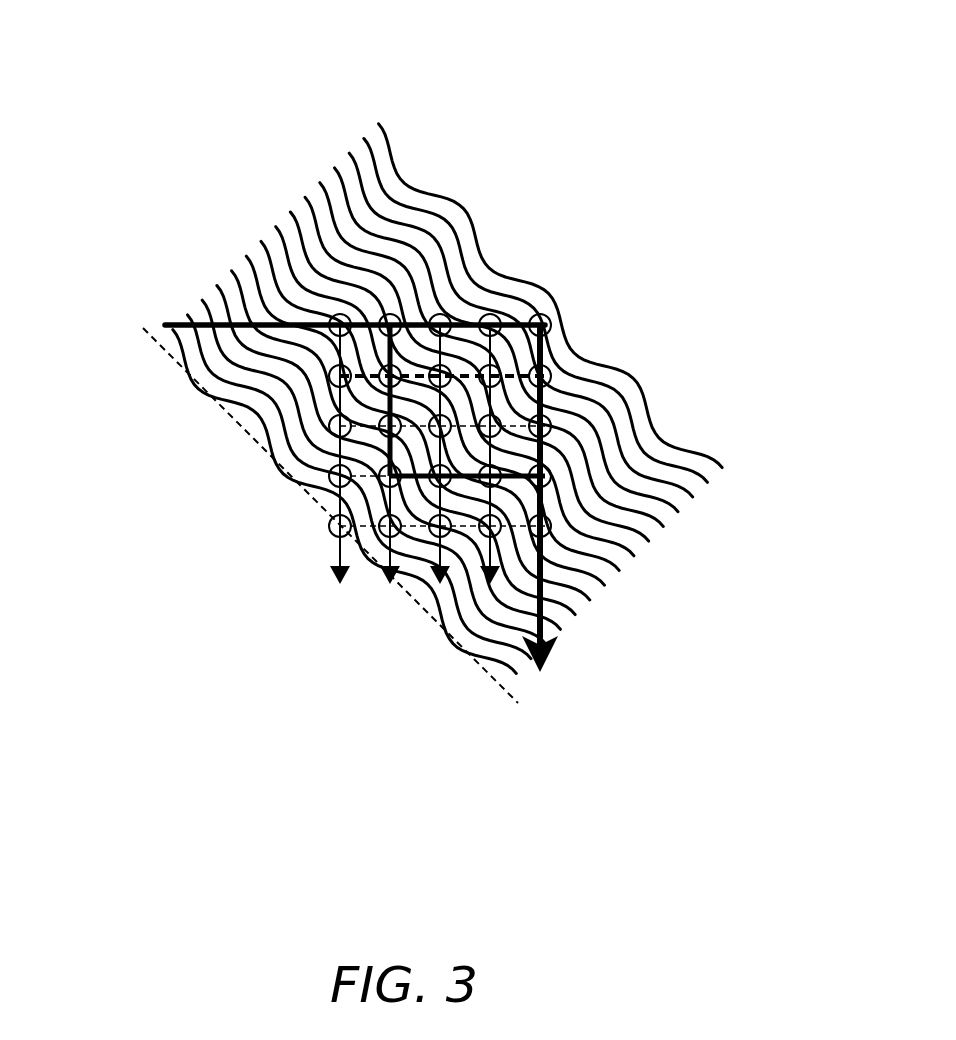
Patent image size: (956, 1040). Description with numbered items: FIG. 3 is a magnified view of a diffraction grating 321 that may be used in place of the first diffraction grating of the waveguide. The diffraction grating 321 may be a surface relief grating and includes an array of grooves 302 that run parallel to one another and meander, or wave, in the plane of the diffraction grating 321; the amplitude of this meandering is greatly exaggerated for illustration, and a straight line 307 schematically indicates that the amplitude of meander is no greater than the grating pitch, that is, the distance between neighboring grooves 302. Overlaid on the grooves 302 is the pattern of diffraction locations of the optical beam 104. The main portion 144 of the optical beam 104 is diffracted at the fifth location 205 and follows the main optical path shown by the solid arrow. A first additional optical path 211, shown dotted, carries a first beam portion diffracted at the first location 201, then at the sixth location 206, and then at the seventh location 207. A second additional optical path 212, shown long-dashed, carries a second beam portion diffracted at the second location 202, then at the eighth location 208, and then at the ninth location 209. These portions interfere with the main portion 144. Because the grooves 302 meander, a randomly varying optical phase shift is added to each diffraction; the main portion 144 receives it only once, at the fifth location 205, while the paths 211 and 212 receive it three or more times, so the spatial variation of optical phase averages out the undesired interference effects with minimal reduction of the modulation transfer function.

The optical beam 104 is at (190, 324).
The selected portion 144 is at (547, 612).
The first location 201 is at (340, 313).
The second location 202 is at (388, 313).
The fifth location 205 is at (538, 313).
The sixth location 206 is at (340, 377).
The seventh location 207 is at (547, 365).
The eighth location 208 is at (330, 527).
The ninth location 209 is at (540, 477).
The first additional optical path 211 is at (340, 360).
The second additional optical path 212 is at (447, 478).
The grooves 302 is at (675, 446).
The straight line 307 is at (520, 703).
The diffraction grating 321 is at (457, 152).